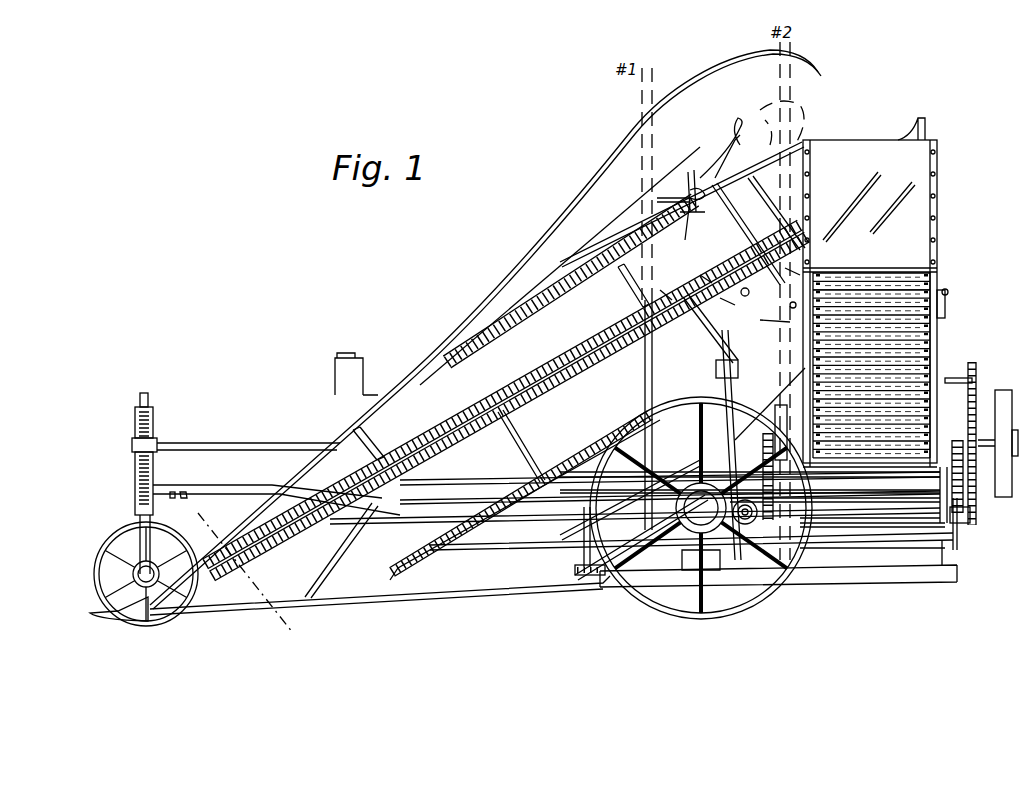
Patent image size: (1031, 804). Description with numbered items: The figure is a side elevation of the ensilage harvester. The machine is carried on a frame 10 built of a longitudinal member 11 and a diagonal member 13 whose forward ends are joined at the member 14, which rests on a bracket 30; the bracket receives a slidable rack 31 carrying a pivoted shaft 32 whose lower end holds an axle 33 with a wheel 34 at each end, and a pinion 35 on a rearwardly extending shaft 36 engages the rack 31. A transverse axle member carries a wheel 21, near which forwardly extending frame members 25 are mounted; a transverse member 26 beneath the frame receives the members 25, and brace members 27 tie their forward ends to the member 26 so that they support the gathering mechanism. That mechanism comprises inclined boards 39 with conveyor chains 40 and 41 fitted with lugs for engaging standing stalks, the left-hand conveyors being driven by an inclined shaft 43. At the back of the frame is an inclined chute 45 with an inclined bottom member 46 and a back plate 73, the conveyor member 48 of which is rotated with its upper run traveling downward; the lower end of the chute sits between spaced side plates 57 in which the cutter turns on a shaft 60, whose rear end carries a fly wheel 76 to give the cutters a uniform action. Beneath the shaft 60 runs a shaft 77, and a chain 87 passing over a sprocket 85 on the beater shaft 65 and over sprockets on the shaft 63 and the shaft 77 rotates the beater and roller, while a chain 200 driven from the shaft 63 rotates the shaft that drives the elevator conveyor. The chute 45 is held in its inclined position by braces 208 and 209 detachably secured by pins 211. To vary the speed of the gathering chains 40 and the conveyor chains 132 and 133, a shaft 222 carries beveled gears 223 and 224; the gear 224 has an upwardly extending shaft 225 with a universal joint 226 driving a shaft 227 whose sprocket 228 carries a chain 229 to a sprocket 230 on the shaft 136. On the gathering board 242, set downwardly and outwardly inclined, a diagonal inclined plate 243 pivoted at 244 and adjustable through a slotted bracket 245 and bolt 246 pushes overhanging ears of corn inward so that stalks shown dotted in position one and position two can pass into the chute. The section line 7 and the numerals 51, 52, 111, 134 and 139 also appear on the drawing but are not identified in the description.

The section line 7 is at (282, 577).
The frame 10 is at (462, 482).
The longitudinally arranged member 11 is at (468, 496).
The diagonally arranged member 13 is at (965, 543).
The member 14 is at (174, 491).
The wheel 21 is at (645, 597).
The forwardly extending frame members 25 is at (658, 558).
The transverse member 26 is at (575, 567).
The brace member 27 is at (355, 596).
The bracket 30 is at (135, 472).
The slidable rack member 31 is at (153, 420).
The shaft 32 is at (148, 398).
The axle 33 is at (133, 574).
The wheel 34 is at (114, 542).
The pinion 35 is at (132, 446).
The shaft 36 is at (235, 446).
The boards 39 is at (485, 329).
The conveyor member 40 is at (280, 553).
The conveyor member 41 is at (410, 567).
The inclined shaft 43 is at (665, 386).
The inclined chute 45 is at (940, 168).
The inclined bottom member 46 is at (869, 199).
The conveyor member 48 is at (912, 326).
The bracket 51 is at (960, 392).
The slat 52 is at (910, 293).
The side plates 57 is at (790, 415).
The shaft 60 is at (998, 462).
The shaft 63 is at (962, 428).
The shaft 65 is at (955, 370).
The back plate 73 is at (926, 125).
The fly wheel 76 is at (1012, 418).
The shaft 77 is at (873, 510).
The sprocket 85 is at (362, 374).
The chain 87 is at (975, 360).
The brace 111 is at (631, 500).
The conveyor chain 132 is at (746, 296).
The conveyor chain 133 is at (500, 338).
The sprocket 134 is at (790, 278).
The shaft 136 is at (745, 218).
The chain 139 is at (735, 288).
The chain 200 is at (976, 522).
The brace 208 is at (780, 329).
The brace 209 is at (945, 308).
The pins 211 is at (965, 292).
The shaft 222 is at (742, 524).
The beveled gear 223 is at (808, 500).
The beveled gear 224 is at (701, 508).
The upwardly extending shaft 225 is at (720, 398).
The universal joint 226 is at (742, 367).
The shaft 227 is at (720, 338).
The sprocket 228 is at (668, 296).
The chain 229 is at (703, 279).
The sprocket 230 is at (765, 245).
The gathering board 242 is at (785, 120).
The inclined plate 243 is at (720, 150).
The pivot 244 is at (738, 128).
The slotted bracket 245 is at (682, 217).
The bolt 246 is at (690, 170).